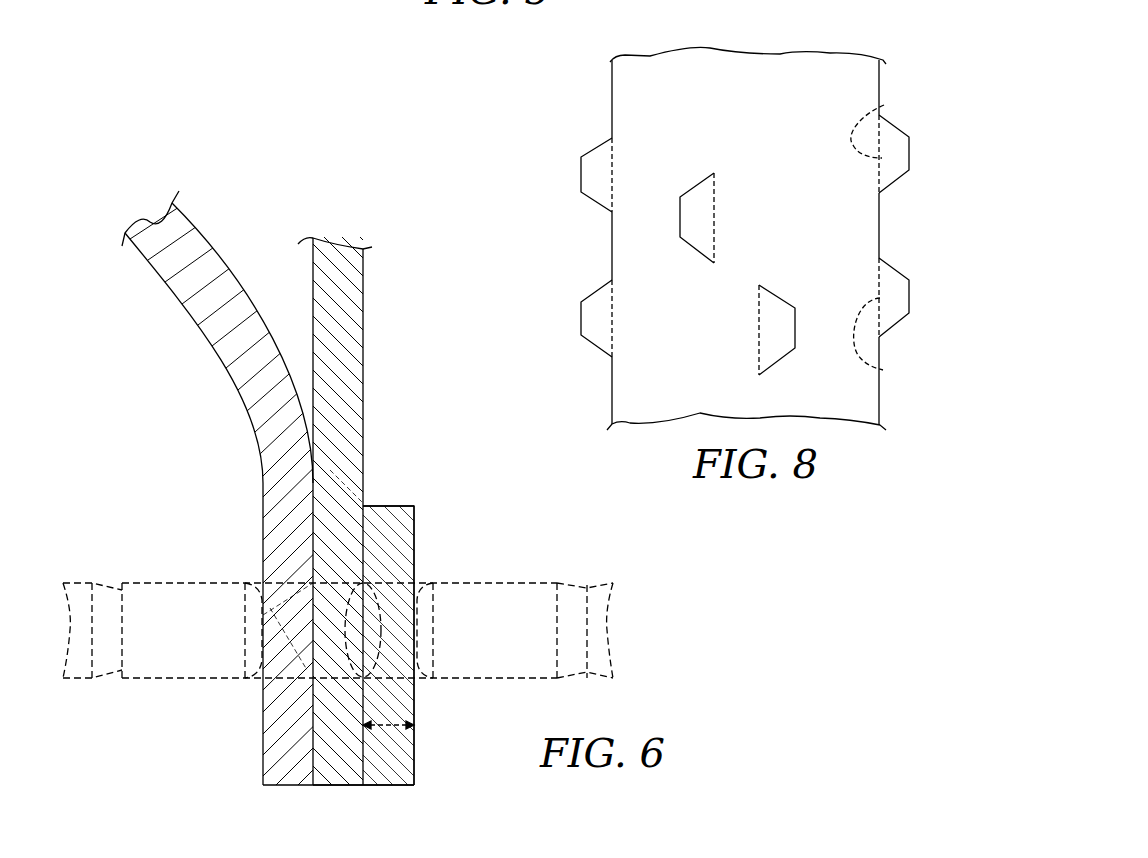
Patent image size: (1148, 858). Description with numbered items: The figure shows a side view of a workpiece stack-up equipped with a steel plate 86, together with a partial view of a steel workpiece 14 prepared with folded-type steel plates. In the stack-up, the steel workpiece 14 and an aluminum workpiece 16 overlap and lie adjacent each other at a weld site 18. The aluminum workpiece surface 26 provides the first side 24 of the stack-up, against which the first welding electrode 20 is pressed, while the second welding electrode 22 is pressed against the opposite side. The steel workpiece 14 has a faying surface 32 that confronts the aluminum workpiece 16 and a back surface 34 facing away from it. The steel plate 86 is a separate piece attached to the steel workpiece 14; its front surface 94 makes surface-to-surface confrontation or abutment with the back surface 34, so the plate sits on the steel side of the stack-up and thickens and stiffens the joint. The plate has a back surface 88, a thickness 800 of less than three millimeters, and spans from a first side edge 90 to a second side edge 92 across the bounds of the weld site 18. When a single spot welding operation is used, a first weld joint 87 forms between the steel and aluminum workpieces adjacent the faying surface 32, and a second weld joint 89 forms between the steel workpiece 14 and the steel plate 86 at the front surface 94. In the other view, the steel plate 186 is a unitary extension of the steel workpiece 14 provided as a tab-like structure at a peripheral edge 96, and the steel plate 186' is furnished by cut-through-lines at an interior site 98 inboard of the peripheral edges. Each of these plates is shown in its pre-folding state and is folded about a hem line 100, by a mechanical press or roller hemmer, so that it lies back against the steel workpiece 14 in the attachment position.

In FIG. 6, the steel workpiece 14 is at (347, 313).
In FIG. 8, the steel workpiece 14 is at (818, 95).
In FIG. 6, the aluminum workpiece 16 is at (236, 313).
In FIG. 6, the weld site 18 is at (300, 672).
In FIG. 6, the first welding electrode 20 is at (168, 678).
In FIG. 6, the second welding electrode 22 is at (487, 679).
In FIG. 6, the first side 24 is at (263, 530).
In FIG. 6, the aluminum workpiece surface 26 is at (263, 472).
In FIG. 6, the faying surface 32 is at (313, 290).
In FIG. 6, the back surface 34 is at (364, 375).
In FIG. 6, the steel plate 86 is at (393, 548).
In FIG. 6, the first weld joint 87 is at (288, 602).
In FIG. 6, the back surface 88 is at (414, 525).
In FIG. 6, the second weld joint 89 is at (370, 583).
In FIG. 6, the first side edge 90 is at (405, 506).
In FIG. 6, the second side edge 92 is at (385, 786).
In FIG. 6, the front surface 94 is at (363, 542).
In FIG. 8, the peripheral edge 96 is at (880, 232).
In FIG. 8, the interior site 98 is at (803, 163).
In FIG. 8, the hem line 100 is at (612, 170).
In FIG. 8, the steel plate 186 is at (741, 226).
In FIG. 8, the steel plate 186' is at (764, 251).
In FIG. 6, the thickness 800 is at (413, 726).